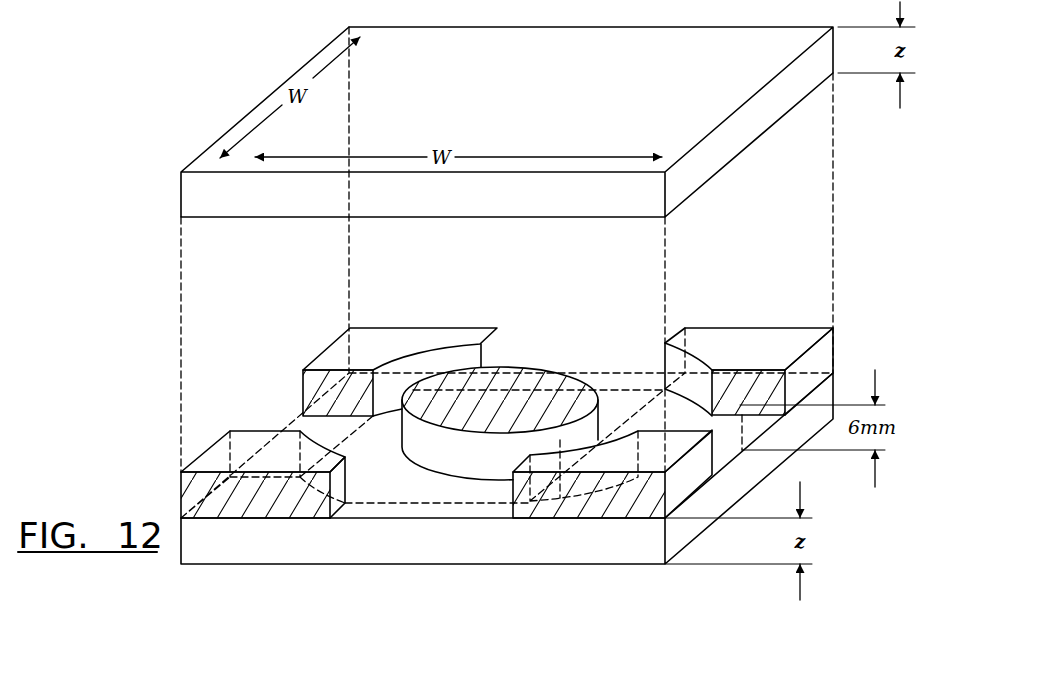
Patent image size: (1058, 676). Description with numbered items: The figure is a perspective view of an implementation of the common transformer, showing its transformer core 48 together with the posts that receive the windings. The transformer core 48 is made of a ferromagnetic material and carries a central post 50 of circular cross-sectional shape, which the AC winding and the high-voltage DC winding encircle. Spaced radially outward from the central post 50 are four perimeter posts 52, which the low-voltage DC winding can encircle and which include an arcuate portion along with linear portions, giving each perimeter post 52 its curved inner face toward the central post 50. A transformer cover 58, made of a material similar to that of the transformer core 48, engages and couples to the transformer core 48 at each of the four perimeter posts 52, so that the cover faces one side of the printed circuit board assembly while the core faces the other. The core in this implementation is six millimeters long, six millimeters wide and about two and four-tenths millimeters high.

The transformer core 48 is at (740, 461).
The central post 50 is at (555, 377).
The perimeter posts 52 is at (393, 337).
The transformer cover 58 is at (838, 78).